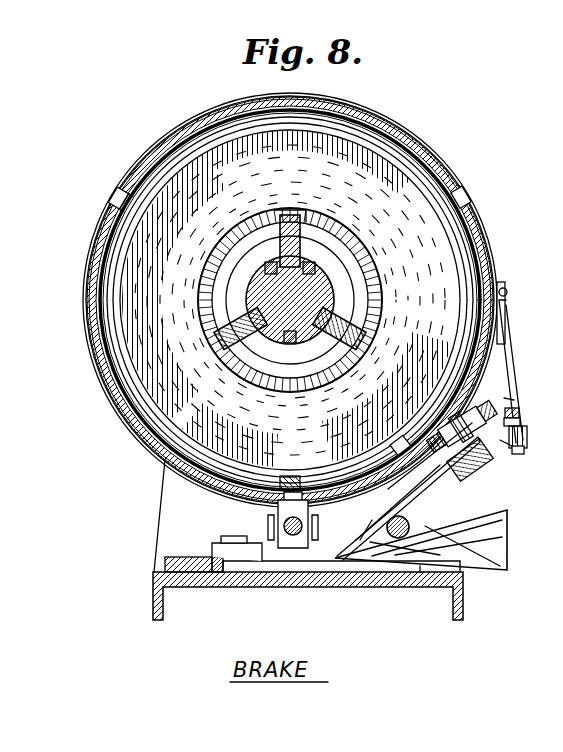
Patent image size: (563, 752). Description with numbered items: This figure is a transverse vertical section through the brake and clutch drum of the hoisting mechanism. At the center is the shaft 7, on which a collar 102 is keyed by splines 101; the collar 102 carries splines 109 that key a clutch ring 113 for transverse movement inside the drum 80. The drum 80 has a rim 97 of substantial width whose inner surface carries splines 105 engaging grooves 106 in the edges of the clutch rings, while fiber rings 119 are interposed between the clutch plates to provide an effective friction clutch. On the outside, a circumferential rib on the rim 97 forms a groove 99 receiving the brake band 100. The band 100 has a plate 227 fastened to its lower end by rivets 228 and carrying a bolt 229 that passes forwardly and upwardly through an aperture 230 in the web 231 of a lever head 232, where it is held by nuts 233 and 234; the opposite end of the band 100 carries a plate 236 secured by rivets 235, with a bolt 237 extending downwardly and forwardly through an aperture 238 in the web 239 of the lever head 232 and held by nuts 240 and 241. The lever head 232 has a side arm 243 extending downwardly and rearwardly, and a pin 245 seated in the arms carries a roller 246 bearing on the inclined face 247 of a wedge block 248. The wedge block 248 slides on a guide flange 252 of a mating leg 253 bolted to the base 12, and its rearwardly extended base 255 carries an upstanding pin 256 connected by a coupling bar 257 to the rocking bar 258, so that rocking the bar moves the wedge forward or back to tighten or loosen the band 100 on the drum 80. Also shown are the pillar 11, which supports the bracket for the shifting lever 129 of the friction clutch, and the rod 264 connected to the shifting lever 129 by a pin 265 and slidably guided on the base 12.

The shaft 7 is at (345, 303).
The pillar 11 is at (163, 468).
The base 12 is at (465, 597).
The drum 80 is at (148, 420).
The rim 97 is at (96, 296).
The groove 99 is at (370, 133).
The brake band 100 is at (405, 150).
The splines 101 is at (278, 348).
The collar 102 is at (238, 340).
The splines 105 is at (118, 200).
The grooves 106 is at (124, 208).
The splines 109 is at (310, 225).
The clutch ring 113 is at (222, 280).
The fiber rings 119 is at (128, 260).
The shifting lever 129 is at (278, 506).
The plate 227 is at (378, 490).
The rivets 228 is at (395, 486).
The bolt 229 is at (437, 466).
The aperture 230 is at (470, 415).
The web 231 is at (496, 470).
The lever head 232 is at (512, 412).
The nut 233 is at (490, 488).
The nut 234 is at (510, 398).
The rivets 235 is at (507, 290).
The plate 236 is at (506, 302).
The bolt 237 is at (510, 340).
The aperture 238 is at (527, 437).
The web 239 is at (528, 450).
The nut 240 is at (515, 427).
The nut 241 is at (510, 452).
The side arm 243 is at (502, 540).
The pin 245 is at (418, 568).
The roller 246 is at (392, 538).
The inclined face 247 is at (480, 553).
The wedge block 248 is at (503, 570).
The guide flange 252 is at (366, 530).
The mating leg 253 is at (490, 515).
The base 255 is at (262, 574).
The upstanding pin 256 is at (205, 574).
The coupling bar 257 is at (208, 540).
The rocking bar 258 is at (165, 563).
The rod 264 is at (322, 574).
The pin 265 is at (270, 530).